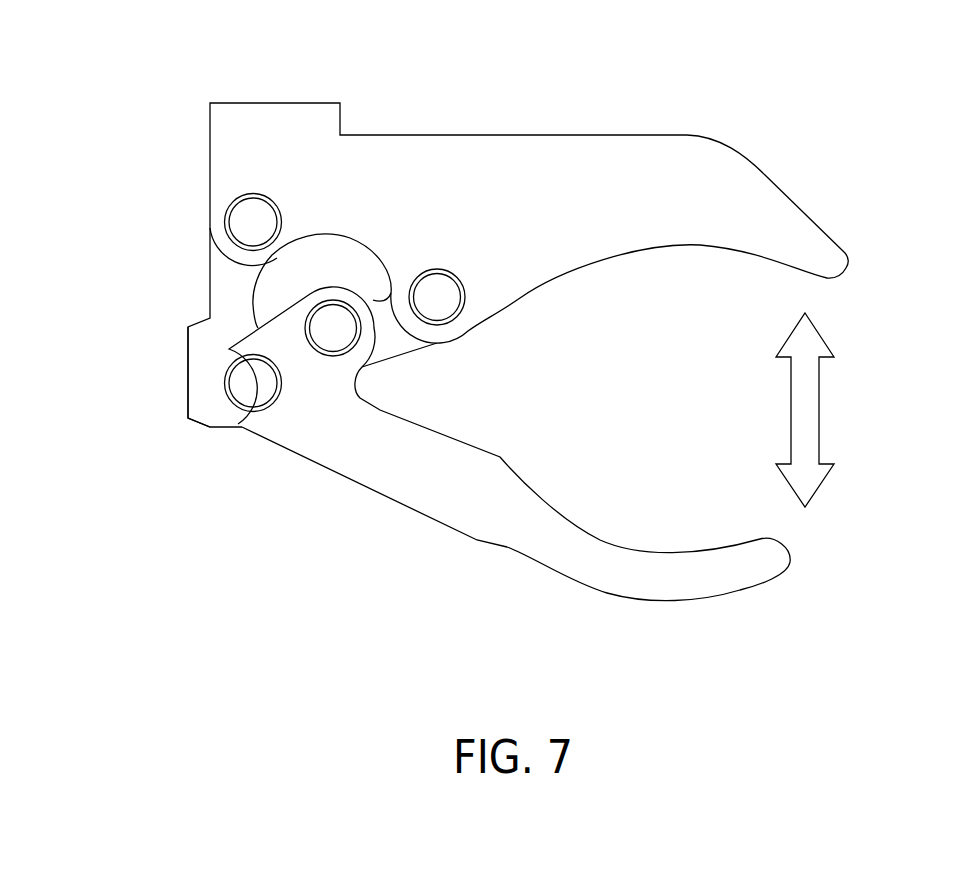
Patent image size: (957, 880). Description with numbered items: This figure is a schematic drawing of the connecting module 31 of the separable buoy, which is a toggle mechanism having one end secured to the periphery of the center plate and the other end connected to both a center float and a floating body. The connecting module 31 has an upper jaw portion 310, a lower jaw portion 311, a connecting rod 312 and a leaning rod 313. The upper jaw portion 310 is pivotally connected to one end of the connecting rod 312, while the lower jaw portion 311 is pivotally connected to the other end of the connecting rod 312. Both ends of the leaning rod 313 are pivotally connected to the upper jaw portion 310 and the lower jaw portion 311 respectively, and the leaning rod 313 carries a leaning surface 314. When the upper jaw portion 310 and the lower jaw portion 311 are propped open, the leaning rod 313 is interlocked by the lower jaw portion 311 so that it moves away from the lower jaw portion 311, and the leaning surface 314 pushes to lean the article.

The connecting module 31 is at (837, 80).
The upper jaw portion 310 is at (767, 210).
The lower jaw portion 311 is at (770, 562).
The connecting rod 312 is at (403, 342).
The leaning rod 313 is at (230, 292).
The leaning surface 314 is at (187, 382).